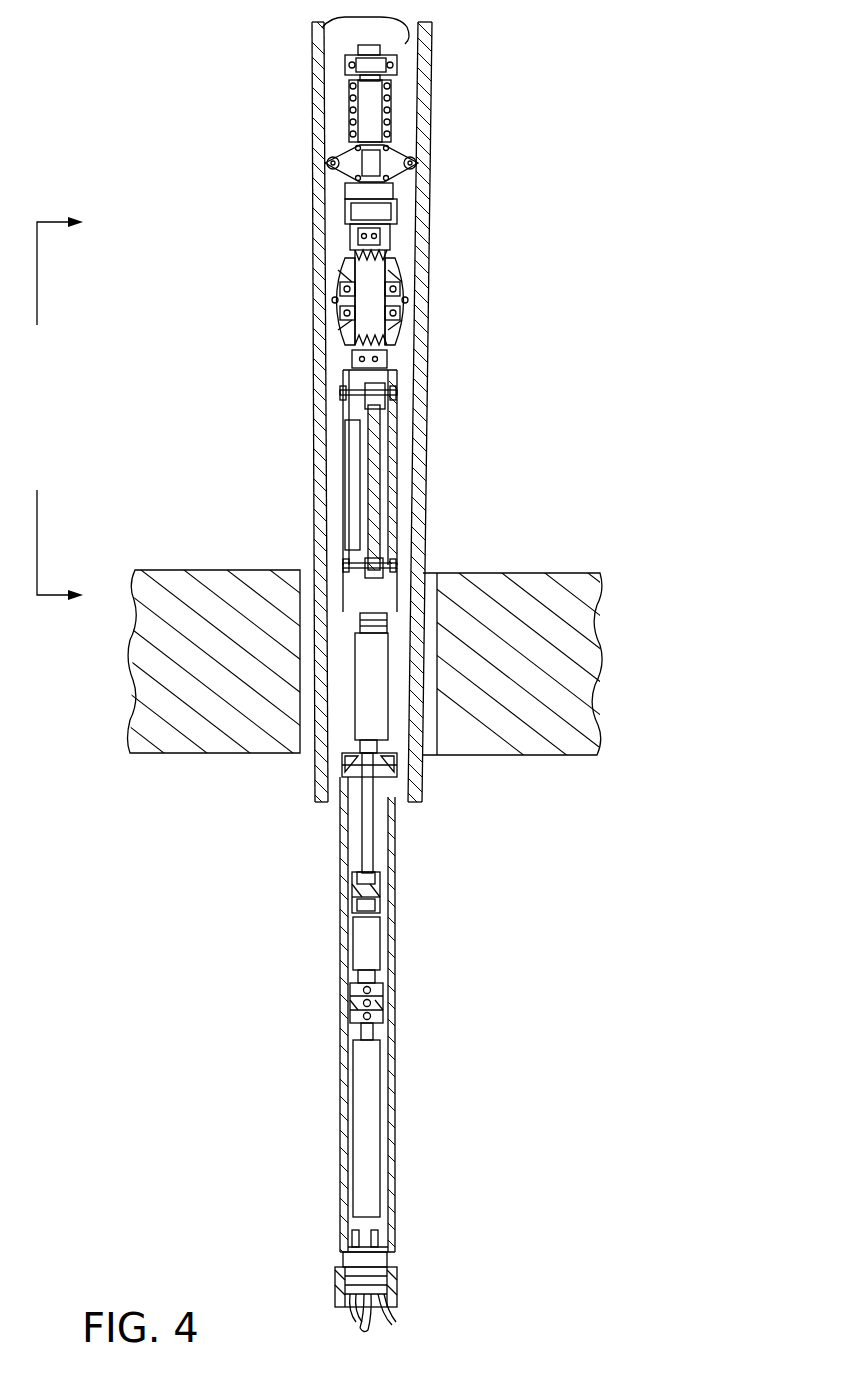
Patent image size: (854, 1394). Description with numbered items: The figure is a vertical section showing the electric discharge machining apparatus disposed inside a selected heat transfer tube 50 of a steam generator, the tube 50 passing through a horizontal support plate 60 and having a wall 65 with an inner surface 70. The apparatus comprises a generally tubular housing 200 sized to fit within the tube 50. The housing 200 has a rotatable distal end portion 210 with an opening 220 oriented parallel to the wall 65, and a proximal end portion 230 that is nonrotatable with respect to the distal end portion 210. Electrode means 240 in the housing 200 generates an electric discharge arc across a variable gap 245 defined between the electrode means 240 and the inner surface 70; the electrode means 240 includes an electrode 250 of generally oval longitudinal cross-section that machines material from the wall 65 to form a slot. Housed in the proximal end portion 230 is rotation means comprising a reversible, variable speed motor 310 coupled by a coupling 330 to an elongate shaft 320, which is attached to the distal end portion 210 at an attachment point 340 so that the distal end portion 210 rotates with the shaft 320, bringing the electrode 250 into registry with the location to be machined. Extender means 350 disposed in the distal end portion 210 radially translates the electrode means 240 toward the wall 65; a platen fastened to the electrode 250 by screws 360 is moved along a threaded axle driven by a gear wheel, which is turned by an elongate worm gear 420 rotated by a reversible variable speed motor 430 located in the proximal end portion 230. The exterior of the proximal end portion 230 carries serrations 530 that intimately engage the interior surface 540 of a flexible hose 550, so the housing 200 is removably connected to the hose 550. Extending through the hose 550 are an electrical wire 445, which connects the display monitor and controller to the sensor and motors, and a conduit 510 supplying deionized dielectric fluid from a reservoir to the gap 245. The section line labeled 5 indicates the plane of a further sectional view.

The section line 5- 5 is at (69, 409).
The heat transfer tube 50 is at (427, 112).
The horizontal support plate 60 is at (562, 573).
The tube wall 65 is at (315, 452).
The inner surface 70 is at (410, 44).
The housing 200 is at (398, 425).
The distal end portion 210 is at (398, 375).
The opening 220 is at (345, 412).
The proximal end portion 230 is at (398, 925).
The electrode means 240 is at (410, 260).
The variable gap 245 is at (333, 483).
The electrode 250 is at (403, 305).
The motor 310 is at (372, 1105).
The shaft 320 is at (395, 852).
The coupling 330 is at (368, 953).
The attachment point 340 is at (398, 766).
The extender means 350 is at (388, 492).
The screws 360 is at (345, 391).
The worm gear 420 is at (380, 546).
The motor 430 is at (367, 713).
The electrical wire 445 is at (362, 1324).
The conduit 510 is at (350, 1314).
The serrations 530 is at (385, 1250).
The interior surface 540 is at (390, 1300).
The flexible hose 550 is at (398, 1285).